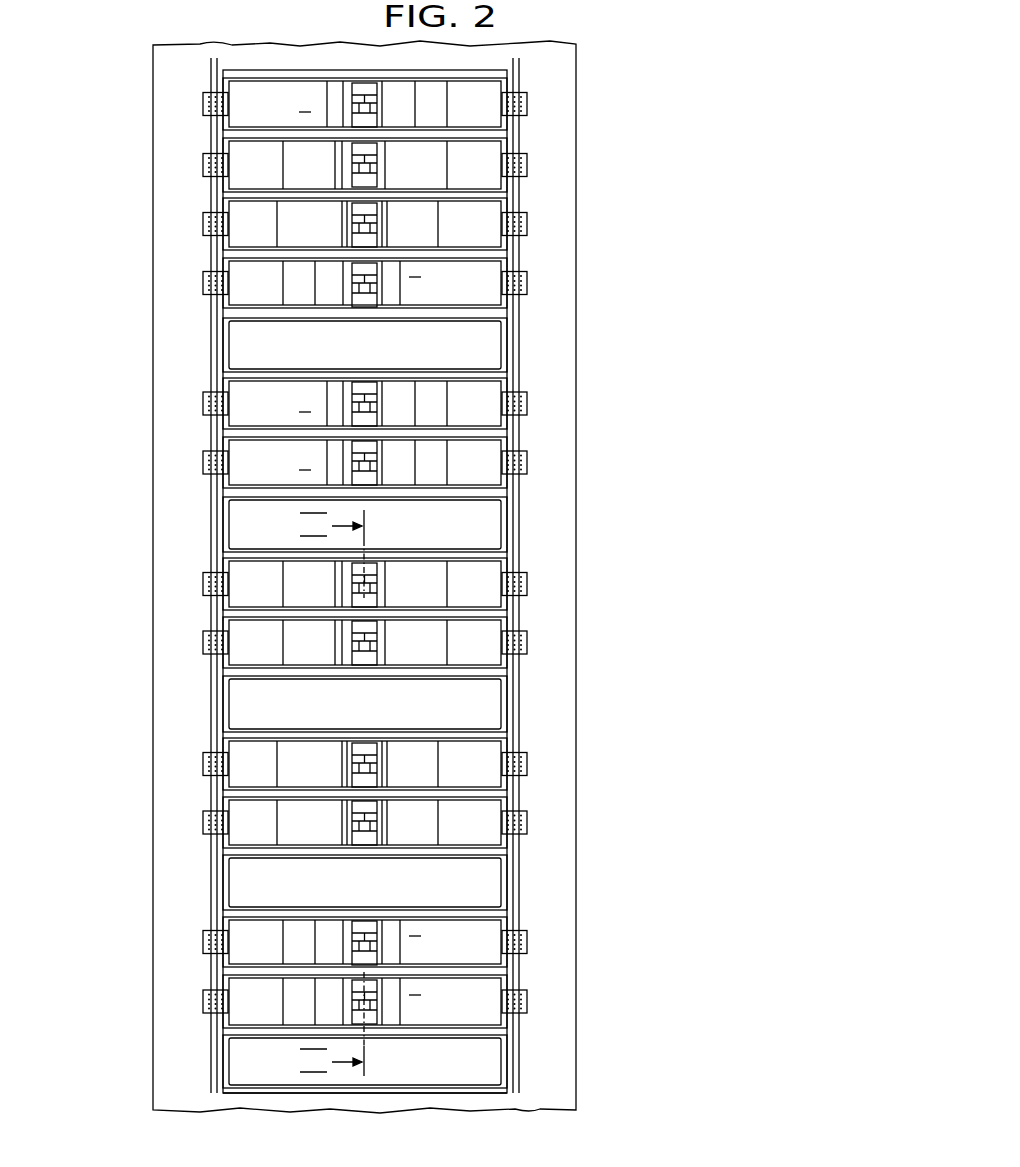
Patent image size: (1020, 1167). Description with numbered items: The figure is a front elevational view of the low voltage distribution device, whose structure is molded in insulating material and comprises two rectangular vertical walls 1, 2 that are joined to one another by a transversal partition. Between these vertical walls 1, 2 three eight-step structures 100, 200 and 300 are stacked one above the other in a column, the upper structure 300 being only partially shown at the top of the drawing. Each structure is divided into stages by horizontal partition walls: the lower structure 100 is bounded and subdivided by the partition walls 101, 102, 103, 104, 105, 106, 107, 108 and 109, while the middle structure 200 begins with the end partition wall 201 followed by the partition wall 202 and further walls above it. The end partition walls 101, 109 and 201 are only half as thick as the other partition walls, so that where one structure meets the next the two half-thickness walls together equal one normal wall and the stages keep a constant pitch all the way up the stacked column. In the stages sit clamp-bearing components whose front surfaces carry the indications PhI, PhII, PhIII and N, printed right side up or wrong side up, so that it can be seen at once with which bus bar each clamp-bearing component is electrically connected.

The rectangular vertical wall 1 is at (217, 893).
The rectangular vertical wall 2 is at (513, 893).
The eight-step structure 100 is at (211, 1090).
The eight-step structure 200 is at (211, 610).
The eight-step structure 300 is at (211, 130).
The end partition wall 101 is at (488, 1090).
The horizontal partition wall 102 is at (483, 1031).
The horizontal partition wall 103 is at (488, 968).
The horizontal partition wall 104 is at (488, 915).
The horizontal partition wall 105 is at (488, 861).
The horizontal partition wall 106 is at (488, 797).
The horizontal partition wall 107 is at (488, 736).
The horizontal partition wall 108 is at (483, 682).
The end partition wall 109 is at (480, 625).
The end partition wall 201 is at (490, 607).
The horizontal partition wall 202 is at (490, 552).